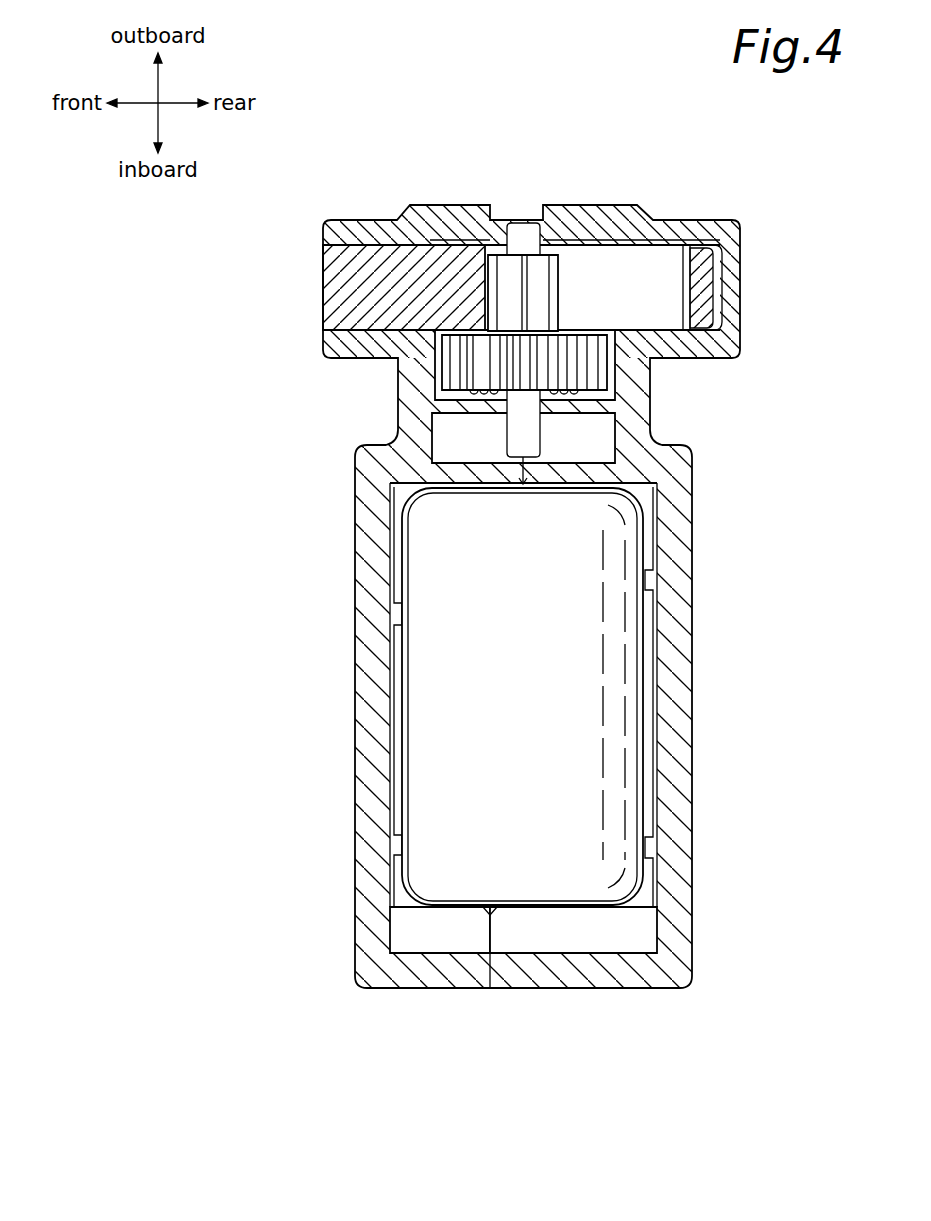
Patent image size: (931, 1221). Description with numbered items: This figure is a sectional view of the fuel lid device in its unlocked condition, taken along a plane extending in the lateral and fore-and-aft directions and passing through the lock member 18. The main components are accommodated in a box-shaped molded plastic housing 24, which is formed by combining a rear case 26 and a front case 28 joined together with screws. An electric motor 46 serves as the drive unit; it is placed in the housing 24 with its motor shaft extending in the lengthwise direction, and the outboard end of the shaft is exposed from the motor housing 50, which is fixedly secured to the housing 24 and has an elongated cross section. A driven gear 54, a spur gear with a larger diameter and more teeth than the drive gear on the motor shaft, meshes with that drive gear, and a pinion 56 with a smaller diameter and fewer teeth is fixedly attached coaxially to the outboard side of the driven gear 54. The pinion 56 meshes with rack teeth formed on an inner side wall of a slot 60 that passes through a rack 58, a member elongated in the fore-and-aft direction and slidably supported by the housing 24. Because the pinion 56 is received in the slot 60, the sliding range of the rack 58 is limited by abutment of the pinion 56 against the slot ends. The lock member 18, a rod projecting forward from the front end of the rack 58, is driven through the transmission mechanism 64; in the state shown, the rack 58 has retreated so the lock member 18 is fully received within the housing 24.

The lock member 18 is at (354, 253).
The housing 24 is at (523, 1022).
The rear case 26 is at (540, 976).
The front case 28 is at (464, 976).
The electric motor 46 is at (585, 907).
The motor housing 50 is at (617, 822).
The driven gear 54 is at (600, 360).
The pinion 56 is at (548, 268).
The rack 58 is at (708, 267).
The slot 60 is at (677, 288).
The transmission mechanism 64 is at (720, 310).